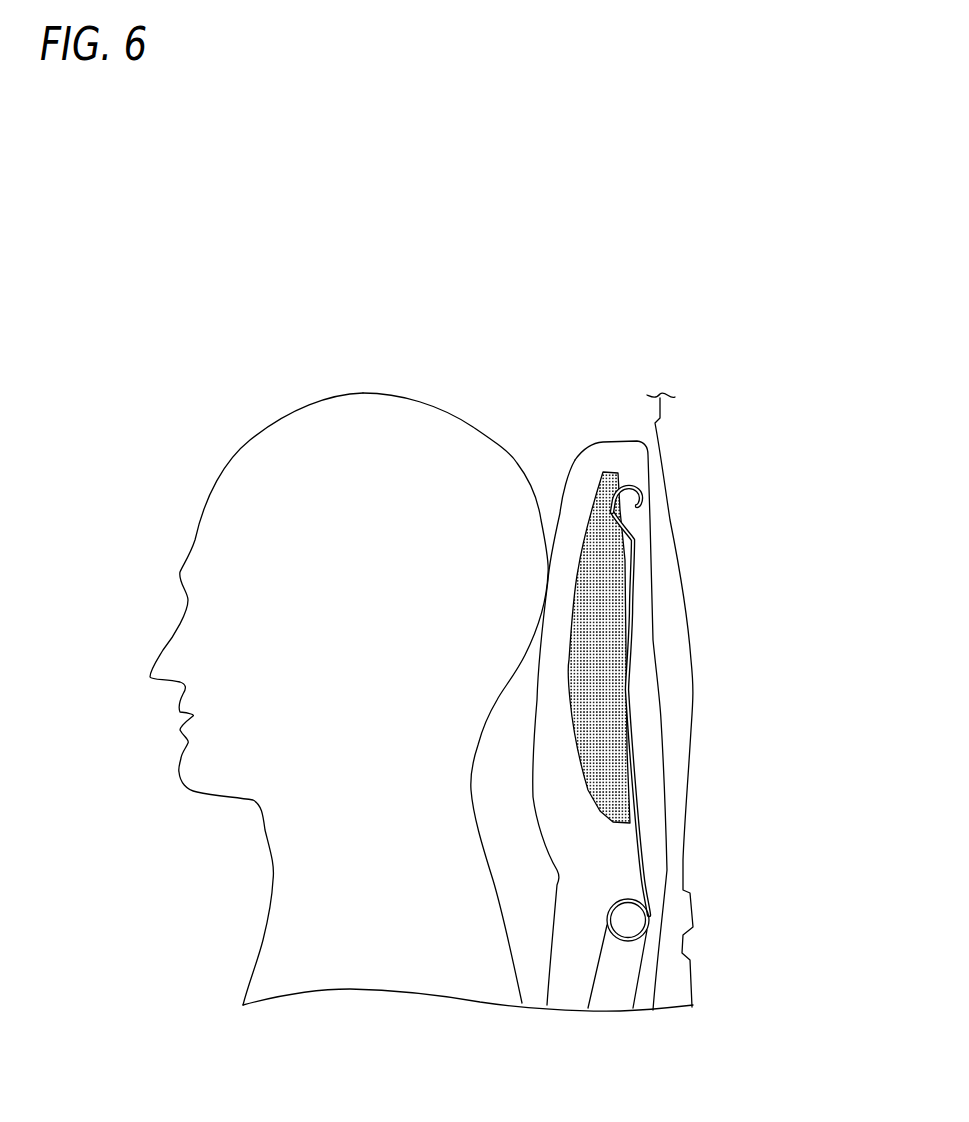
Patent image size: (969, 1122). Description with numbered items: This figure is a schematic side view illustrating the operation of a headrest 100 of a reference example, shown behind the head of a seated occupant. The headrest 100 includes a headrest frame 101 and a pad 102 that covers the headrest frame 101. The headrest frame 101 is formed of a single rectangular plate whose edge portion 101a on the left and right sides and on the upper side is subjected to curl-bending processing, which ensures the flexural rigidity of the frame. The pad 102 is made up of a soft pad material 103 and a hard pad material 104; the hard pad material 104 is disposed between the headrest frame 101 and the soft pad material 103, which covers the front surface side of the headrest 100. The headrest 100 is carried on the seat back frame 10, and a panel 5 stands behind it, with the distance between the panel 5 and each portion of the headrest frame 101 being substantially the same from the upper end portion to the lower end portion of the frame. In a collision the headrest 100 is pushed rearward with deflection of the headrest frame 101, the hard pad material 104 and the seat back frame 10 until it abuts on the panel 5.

The panel 5 is at (697, 978).
The seat back frame 10 is at (590, 983).
The headrest 100 is at (625, 438).
The headrest frame 101 is at (683, 704).
The edge portion 101a is at (632, 489).
The pad 102 is at (609, 385).
The soft pad material 103 is at (578, 490).
The hard pad material 104 is at (608, 472).